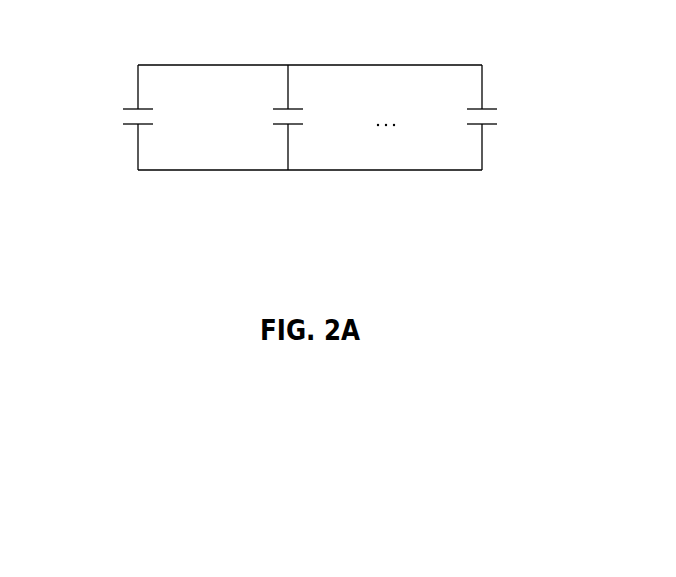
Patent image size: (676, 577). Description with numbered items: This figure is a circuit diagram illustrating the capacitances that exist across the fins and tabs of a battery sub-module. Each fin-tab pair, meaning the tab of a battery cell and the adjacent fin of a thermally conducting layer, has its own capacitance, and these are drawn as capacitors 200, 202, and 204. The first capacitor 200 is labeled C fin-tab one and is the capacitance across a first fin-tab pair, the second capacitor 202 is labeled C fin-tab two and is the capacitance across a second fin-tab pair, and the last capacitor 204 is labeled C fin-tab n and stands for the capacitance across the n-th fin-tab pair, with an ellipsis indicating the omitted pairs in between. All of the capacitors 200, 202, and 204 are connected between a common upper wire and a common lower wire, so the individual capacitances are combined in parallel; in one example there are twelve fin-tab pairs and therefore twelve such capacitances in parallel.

The capacitor 200 is at (124, 94).
The capacitor 202 is at (273, 94).
The capacitor 204 is at (497, 94).